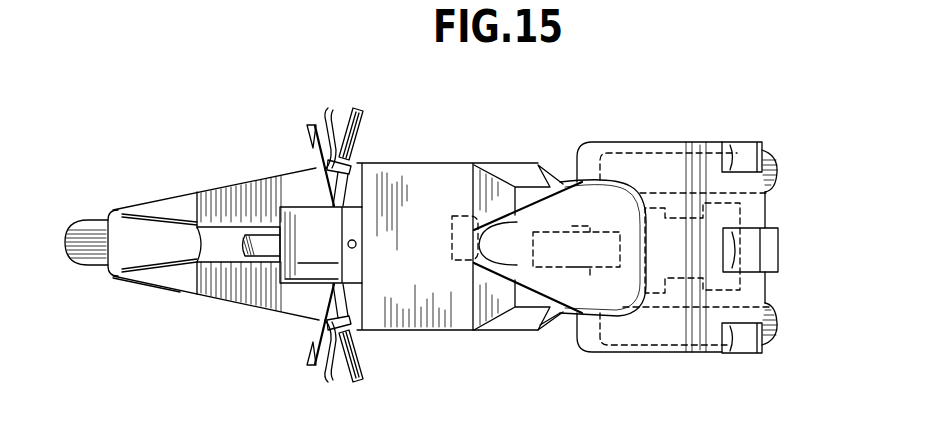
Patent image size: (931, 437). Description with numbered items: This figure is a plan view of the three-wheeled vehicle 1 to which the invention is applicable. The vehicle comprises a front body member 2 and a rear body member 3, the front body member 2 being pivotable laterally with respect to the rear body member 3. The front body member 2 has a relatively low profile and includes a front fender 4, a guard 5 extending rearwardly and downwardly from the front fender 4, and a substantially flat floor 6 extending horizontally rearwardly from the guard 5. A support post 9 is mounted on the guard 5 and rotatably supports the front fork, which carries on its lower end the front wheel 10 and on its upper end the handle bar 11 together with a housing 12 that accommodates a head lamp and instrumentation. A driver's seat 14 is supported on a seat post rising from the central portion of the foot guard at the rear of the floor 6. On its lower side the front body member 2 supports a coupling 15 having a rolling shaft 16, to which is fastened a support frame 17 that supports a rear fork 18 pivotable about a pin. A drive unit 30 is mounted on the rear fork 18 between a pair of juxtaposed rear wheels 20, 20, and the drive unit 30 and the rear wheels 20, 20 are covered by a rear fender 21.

The three-wheeled vehicle 1 is at (248, 176).
The front body member 2 is at (413, 162).
The rear body member 3 is at (652, 134).
The front fender 4 is at (157, 228).
The guard 5 is at (305, 311).
The floor 6 is at (408, 326).
The support post 9 is at (222, 260).
The front wheel 10 is at (100, 262).
The handle bar 11 is at (356, 109).
The housing 12 is at (288, 278).
The driver's seat 14 is at (553, 182).
The coupling 15 is at (470, 310).
The rolling shaft 16 is at (530, 252).
The support frame 17 is at (550, 262).
The rear fork 18 is at (603, 268).
The rear wheels 20 is at (766, 166).
The rear fender 21 is at (753, 207).
The drive unit 30 is at (668, 280).